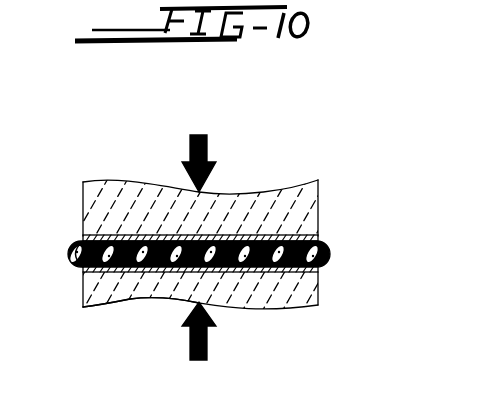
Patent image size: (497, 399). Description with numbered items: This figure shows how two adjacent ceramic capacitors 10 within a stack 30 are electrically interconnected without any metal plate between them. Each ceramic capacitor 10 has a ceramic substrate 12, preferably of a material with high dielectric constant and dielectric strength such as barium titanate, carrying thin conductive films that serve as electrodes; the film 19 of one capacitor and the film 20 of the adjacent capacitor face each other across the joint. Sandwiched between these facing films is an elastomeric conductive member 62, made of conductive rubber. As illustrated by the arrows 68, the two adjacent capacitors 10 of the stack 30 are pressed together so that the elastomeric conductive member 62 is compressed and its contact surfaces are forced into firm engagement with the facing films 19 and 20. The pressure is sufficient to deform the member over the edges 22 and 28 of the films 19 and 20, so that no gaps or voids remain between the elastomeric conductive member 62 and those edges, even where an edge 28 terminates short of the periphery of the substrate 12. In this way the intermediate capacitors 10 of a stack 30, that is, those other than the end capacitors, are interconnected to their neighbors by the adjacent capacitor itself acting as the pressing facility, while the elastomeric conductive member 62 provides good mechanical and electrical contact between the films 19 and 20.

The ceramic capacitor 10 is at (197, 269).
The ceramic substrate 12 is at (308, 201).
The film 19 is at (322, 263).
The film 20 is at (305, 236).
The edge of the film 22 is at (80, 262).
The edge of the film 28 is at (78, 239).
The stack of capacitors 30 is at (120, 314).
The elastomeric conductive member 62 is at (333, 251).
The arrows 68 is at (208, 151).